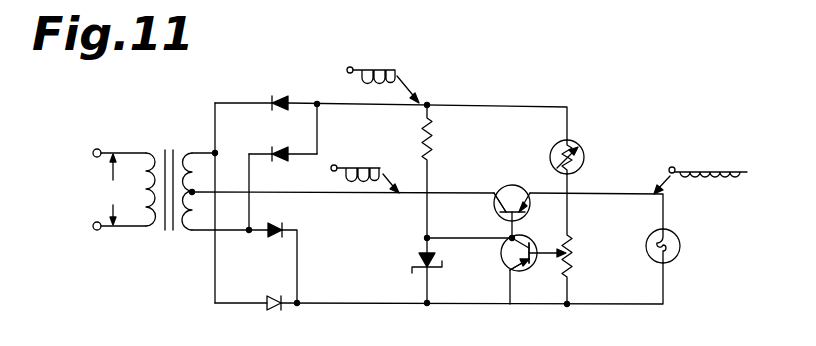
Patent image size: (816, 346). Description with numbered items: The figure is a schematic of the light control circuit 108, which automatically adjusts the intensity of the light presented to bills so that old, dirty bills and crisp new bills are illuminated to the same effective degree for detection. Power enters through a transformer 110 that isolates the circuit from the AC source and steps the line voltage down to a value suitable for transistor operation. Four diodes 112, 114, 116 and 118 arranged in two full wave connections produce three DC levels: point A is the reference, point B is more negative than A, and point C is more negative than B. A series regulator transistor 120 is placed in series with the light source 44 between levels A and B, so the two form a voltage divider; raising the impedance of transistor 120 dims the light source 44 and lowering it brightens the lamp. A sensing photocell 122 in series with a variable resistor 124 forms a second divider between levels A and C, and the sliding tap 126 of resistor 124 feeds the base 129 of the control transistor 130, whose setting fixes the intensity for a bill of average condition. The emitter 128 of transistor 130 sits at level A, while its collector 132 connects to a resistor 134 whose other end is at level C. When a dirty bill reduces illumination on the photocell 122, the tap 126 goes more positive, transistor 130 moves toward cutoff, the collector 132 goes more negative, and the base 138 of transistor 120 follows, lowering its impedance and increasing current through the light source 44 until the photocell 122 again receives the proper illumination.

The light control circuit 108 is at (642, 137).
The transformer 110 is at (191, 146).
The diode 112 is at (281, 100).
The diode 114 is at (288, 149).
The diode 116 is at (272, 238).
The diode 118 is at (269, 311).
The series regulator transistor 120 is at (524, 172).
The sensing photocell 122 is at (585, 160).
The variable resistor 124 is at (572, 257).
The sliding tap 126 is at (547, 257).
The emitter 128 is at (520, 272).
The base 129 is at (533, 249).
The control transistor 130 is at (504, 270).
The collector 132 is at (514, 246).
The resistor 134 is at (424, 136).
The base 138 is at (503, 212).
The light source 44 is at (681, 250).